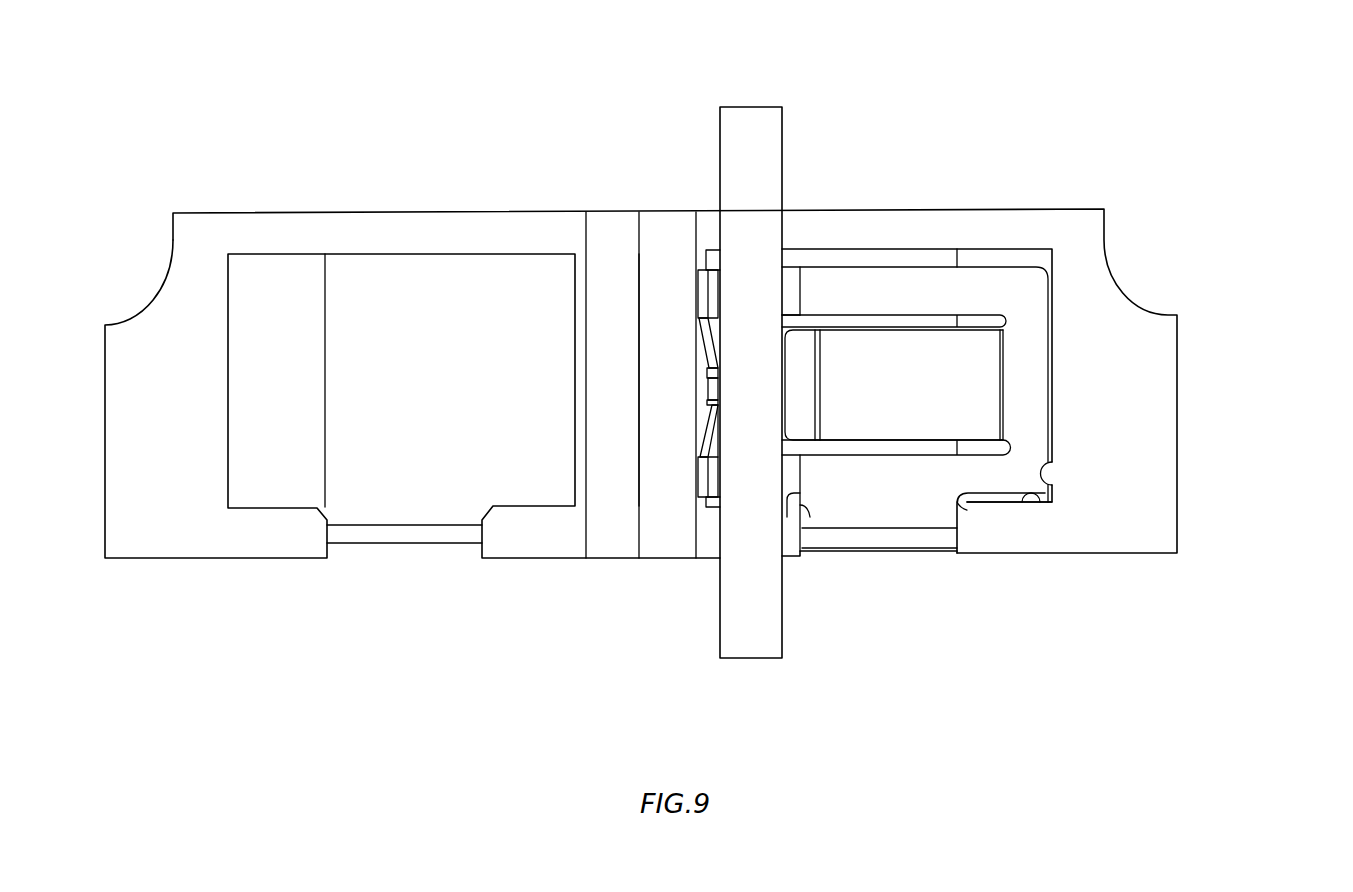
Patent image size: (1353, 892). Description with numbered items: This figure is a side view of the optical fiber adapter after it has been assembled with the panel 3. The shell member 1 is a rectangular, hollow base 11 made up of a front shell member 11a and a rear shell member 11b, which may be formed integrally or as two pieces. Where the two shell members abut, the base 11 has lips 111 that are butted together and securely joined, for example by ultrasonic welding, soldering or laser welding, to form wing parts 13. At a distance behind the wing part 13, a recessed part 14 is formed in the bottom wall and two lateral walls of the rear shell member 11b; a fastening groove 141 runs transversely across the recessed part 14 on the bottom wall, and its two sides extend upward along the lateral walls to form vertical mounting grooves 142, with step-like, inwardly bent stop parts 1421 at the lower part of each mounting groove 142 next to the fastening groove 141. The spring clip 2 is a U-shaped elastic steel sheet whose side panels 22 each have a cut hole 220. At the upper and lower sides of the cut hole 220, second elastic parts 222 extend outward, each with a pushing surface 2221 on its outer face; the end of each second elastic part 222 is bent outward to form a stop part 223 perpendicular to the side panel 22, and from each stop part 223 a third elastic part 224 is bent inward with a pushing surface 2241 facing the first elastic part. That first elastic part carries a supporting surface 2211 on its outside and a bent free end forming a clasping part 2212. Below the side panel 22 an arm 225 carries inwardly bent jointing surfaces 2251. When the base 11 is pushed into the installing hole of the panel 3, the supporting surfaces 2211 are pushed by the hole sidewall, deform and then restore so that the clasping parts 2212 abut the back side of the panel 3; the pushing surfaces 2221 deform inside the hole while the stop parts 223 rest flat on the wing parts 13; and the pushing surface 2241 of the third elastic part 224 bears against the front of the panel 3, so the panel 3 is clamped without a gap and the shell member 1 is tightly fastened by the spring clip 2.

The shell member 1 is at (1035, 108).
The spring clip 2 is at (1245, 397).
The panel 3 is at (750, 118).
The base 11 is at (978, 192).
The front shell member 11a is at (458, 222).
The rear shell member 11b is at (922, 220).
The wing part 13 is at (636, 140).
The recessed part 14 is at (937, 640).
The side panel 22 is at (1030, 378).
The lip 111 is at (668, 218).
The fastening groove 141 is at (957, 533).
The mounting groove 142 is at (1043, 482).
The cut hole 220 is at (977, 315).
The second elastic part 222 is at (835, 145).
The stop part 223 is at (705, 473).
The third elastic part 224 is at (710, 428).
The arm 225 is at (905, 520).
The stop part 1421 is at (1043, 500).
The supporting surface 2211 is at (975, 395).
The clasping part 2212 is at (802, 420).
The pushing surface 2221 is at (790, 278).
The pushing surface 2241 is at (722, 415).
The jointing surface 2251 is at (988, 494).